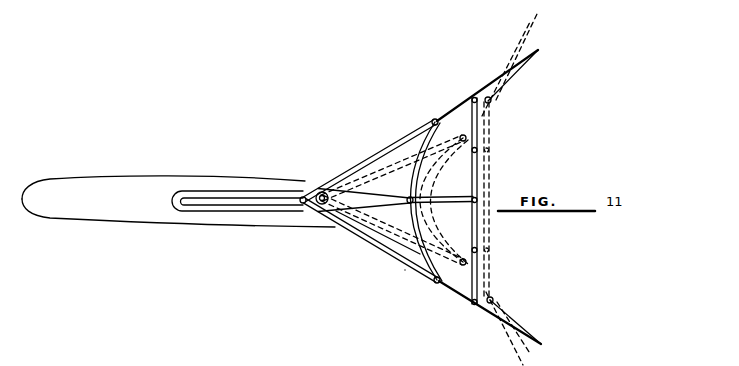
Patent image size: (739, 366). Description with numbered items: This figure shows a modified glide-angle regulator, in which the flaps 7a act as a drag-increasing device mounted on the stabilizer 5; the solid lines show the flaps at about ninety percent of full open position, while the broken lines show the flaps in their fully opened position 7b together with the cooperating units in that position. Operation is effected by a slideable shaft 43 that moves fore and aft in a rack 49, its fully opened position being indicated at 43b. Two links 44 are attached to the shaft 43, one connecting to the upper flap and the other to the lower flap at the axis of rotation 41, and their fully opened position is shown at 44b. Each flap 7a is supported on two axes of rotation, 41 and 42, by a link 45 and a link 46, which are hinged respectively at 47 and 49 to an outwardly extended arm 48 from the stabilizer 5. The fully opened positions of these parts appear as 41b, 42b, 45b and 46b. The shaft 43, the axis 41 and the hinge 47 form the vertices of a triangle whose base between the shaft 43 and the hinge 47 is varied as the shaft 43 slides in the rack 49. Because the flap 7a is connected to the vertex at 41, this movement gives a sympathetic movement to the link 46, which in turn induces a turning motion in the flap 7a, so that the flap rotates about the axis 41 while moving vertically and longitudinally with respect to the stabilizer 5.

The stabilizer 5 is at (88, 207).
The rack 49 is at (187, 192).
The slideable shaft 43 is at (301, 205).
The shaft position in fully opened flap position 43b is at (302, 198).
The links 44 is at (343, 176).
The links in fully opened position 44b is at (363, 179).
The axis of rotation 41 is at (435, 119).
The axis of rotation in fully opened position 41b is at (466, 140).
The axis of rotation 42 is at (474, 97).
The axis of rotation in fully opened position 42b is at (488, 102).
The link 45 is at (398, 258).
The link in fully opened position 45b is at (405, 270).
The link 46 is at (480, 157).
The link in fully opened position 46b is at (487, 114).
The hinge 47 is at (413, 197).
The outwardly extended arm 48 is at (446, 201).
The glide-angle regulator 7a is at (522, 62).
The glide-angle regulator in fully opened position 7b is at (492, 102).